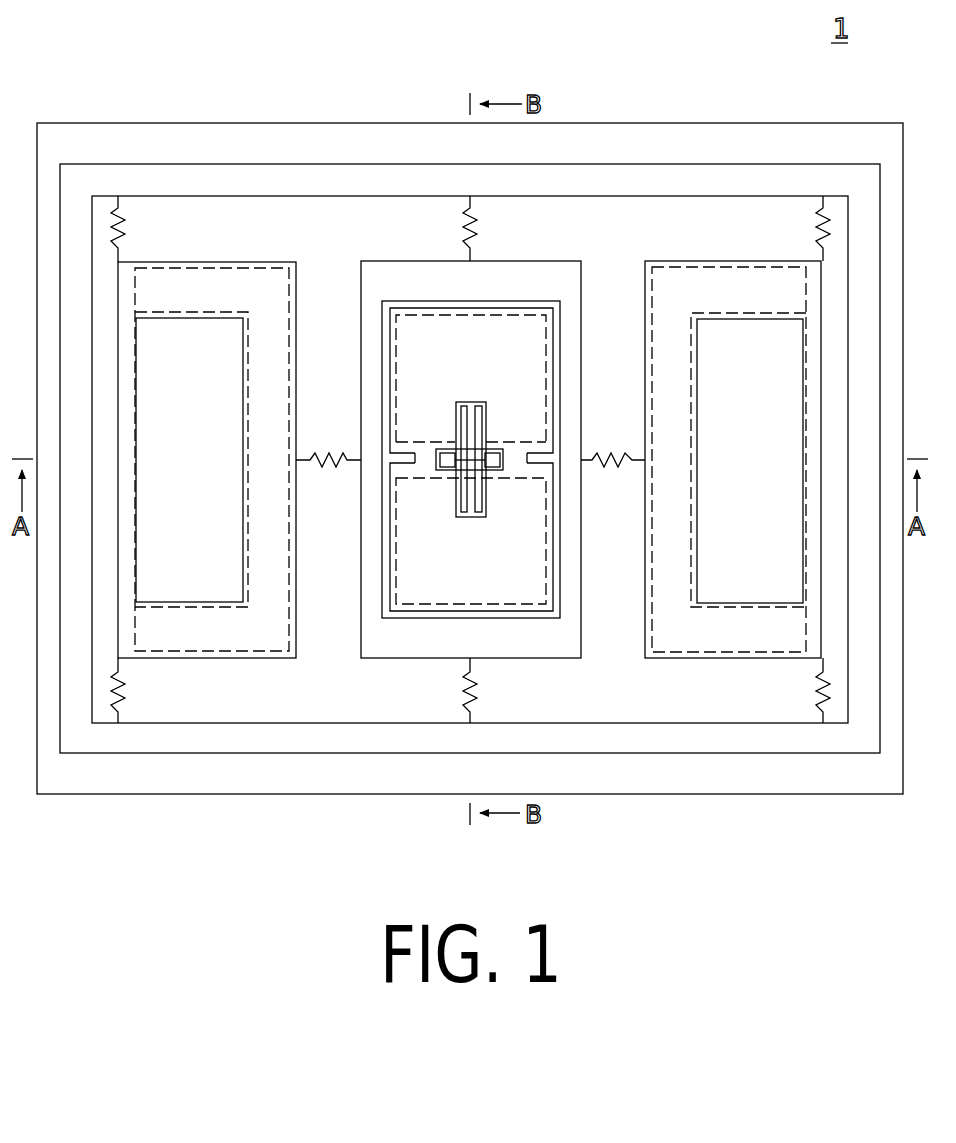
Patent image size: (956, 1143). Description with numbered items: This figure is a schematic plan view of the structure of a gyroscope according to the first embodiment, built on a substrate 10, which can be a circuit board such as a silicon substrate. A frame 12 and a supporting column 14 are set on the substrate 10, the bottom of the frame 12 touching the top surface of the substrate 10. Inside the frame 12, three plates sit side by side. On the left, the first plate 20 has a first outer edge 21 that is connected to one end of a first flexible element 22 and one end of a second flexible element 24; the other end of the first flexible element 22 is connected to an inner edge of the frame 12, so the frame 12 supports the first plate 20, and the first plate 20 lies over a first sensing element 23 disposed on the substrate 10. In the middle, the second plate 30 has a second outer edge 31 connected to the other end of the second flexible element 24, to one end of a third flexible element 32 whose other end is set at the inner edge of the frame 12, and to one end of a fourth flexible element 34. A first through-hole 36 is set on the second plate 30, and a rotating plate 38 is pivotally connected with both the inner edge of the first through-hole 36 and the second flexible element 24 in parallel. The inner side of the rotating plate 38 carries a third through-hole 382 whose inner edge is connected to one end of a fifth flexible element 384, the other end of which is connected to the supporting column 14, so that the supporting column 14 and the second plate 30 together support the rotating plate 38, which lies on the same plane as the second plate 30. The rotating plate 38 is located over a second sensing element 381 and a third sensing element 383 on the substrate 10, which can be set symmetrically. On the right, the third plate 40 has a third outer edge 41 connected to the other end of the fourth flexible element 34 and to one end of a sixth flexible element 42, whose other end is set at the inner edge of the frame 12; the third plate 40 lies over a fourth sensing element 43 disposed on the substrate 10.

The substrate 10 is at (82, 123).
The frame 12 is at (175, 164).
The supporting column 14 is at (491, 452).
The first plate 20 is at (246, 262).
The first outer edge 21 is at (300, 297).
The first flexible element 22 is at (125, 243).
The first sensing element 23 is at (272, 651).
The second flexible element 24 is at (330, 468).
The second plate 30 is at (397, 261).
The second outer edge 31 is at (588, 297).
The third flexible element 32 is at (478, 240).
The fourth flexible element 34 is at (620, 468).
The first through-hole 36 is at (432, 299).
The rotating plate 38 is at (432, 604).
The second sensing element 381 is at (518, 604).
The third through-hole 382 is at (461, 492).
The third sensing element 383 is at (518, 315).
The fifth flexible element 384 is at (462, 448).
The third plate 40 is at (680, 261).
The third outer edge 41 is at (643, 618).
The sixth flexible element 42 is at (816, 243).
The fourth sensing element 43 is at (668, 652).